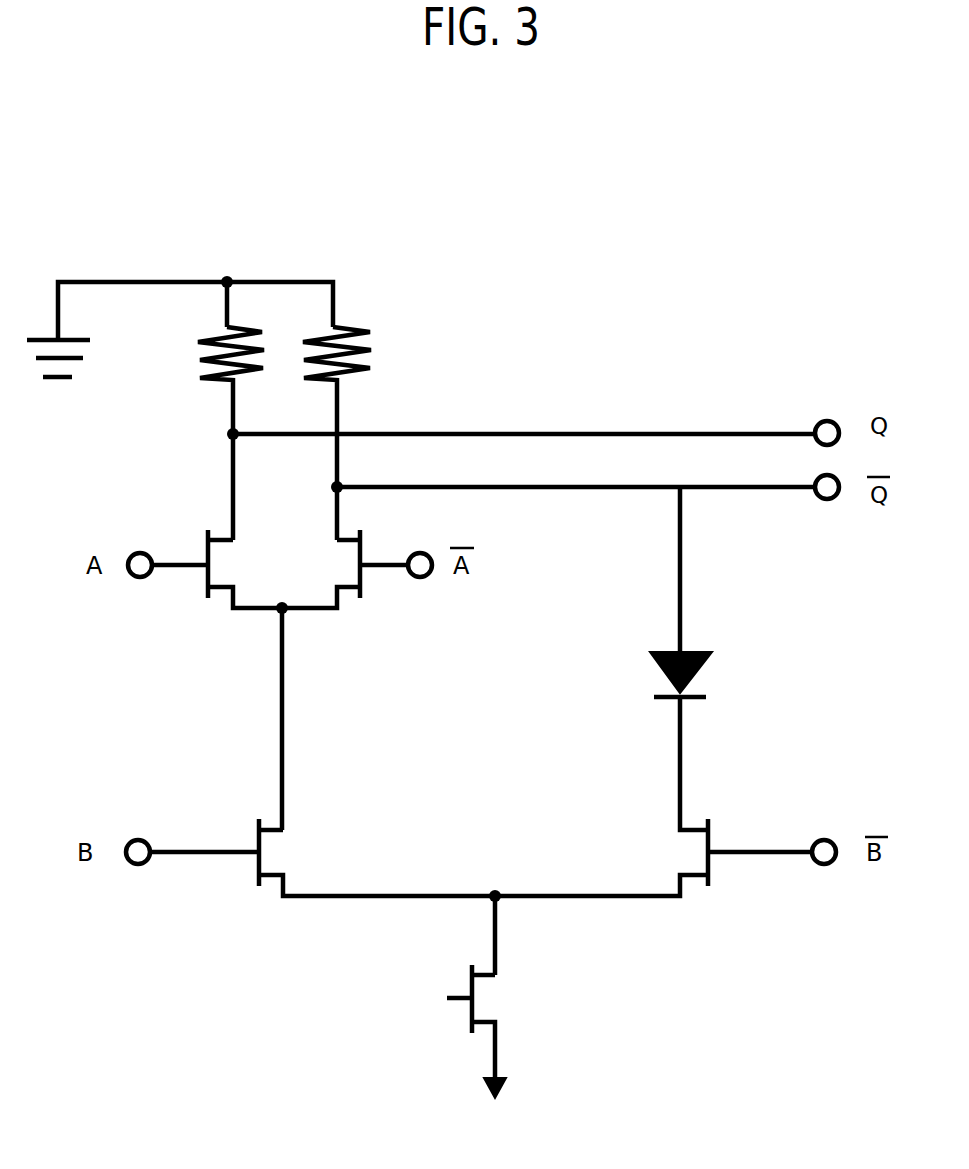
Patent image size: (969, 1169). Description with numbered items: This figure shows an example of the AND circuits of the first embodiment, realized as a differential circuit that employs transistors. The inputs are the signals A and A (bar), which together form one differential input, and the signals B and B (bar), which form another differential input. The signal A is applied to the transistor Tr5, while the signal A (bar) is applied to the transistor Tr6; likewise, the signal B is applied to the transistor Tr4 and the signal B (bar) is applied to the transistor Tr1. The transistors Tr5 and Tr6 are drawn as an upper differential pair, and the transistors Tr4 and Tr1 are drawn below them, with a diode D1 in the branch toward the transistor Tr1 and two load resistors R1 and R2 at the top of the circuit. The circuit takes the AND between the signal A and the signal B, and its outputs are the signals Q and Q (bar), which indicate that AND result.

The transistor Tr1 is at (665, 804).
The transistor Tr4 is at (310, 865).
The transistor Tr5 is at (204, 575).
The transistor Tr6 is at (361, 575).
The diode D1 is at (706, 592).
The resistor R1 is at (231, 433).
The resistor R2 is at (337, 433).